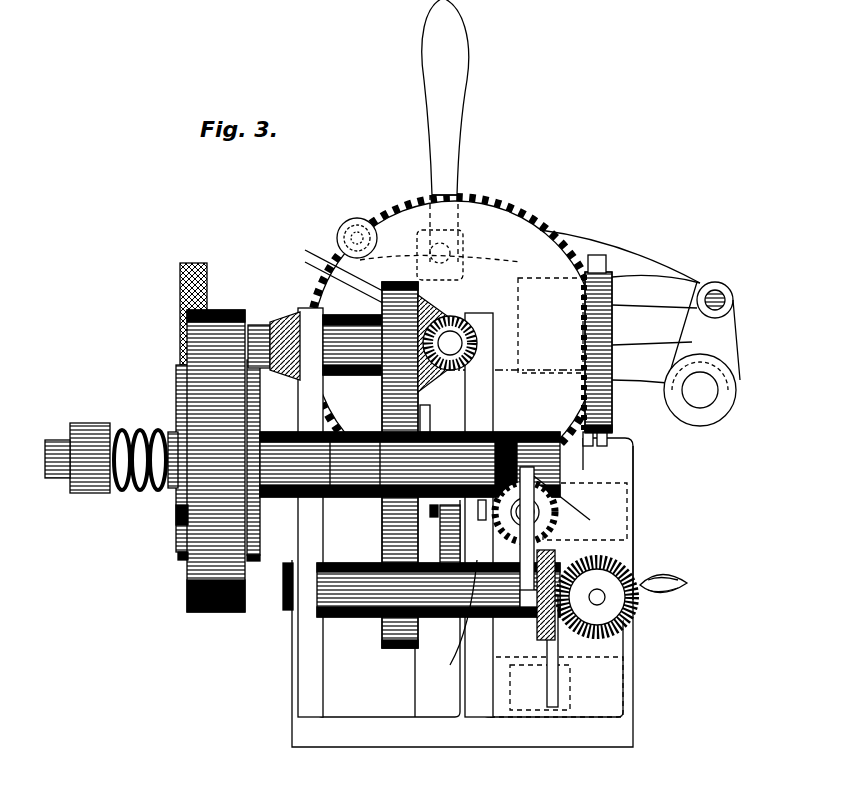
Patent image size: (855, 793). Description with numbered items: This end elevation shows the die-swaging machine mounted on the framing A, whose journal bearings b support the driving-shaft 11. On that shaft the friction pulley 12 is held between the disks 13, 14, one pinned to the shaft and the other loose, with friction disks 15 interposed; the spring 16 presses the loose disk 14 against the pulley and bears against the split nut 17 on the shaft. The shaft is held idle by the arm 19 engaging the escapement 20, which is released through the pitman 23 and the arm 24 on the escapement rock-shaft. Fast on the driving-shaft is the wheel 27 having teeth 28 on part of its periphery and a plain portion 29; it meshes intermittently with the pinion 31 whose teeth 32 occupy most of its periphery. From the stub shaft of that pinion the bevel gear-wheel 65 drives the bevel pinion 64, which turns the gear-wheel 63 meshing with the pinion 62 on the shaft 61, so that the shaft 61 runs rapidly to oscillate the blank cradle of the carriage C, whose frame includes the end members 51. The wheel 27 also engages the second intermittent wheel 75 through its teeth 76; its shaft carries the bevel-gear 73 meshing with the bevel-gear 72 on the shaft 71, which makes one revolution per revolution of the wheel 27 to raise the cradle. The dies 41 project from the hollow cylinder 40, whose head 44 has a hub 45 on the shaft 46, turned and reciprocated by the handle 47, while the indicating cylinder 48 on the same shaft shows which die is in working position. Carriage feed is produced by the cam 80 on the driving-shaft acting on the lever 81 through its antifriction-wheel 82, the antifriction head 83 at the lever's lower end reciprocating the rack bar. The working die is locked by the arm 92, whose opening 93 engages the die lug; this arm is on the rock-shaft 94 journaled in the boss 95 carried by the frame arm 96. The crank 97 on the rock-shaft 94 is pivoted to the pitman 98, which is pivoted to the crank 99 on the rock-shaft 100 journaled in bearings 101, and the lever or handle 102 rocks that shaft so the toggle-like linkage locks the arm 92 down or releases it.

The driving-shaft 11 is at (60, 480).
The friction pulley 12 is at (220, 613).
The disk 13 is at (260, 507).
The loose disk 14 is at (175, 513).
The friction disks 15 is at (183, 553).
The spring 16 is at (133, 427).
The split nut 17 is at (90, 423).
The arm 19 is at (425, 413).
The escapement 20 is at (435, 420).
The pitman 23 is at (440, 513).
The arm 24 is at (450, 540).
The wheel 27 is at (387, 513).
The teeth 28 is at (387, 533).
The plain portion 29 is at (397, 560).
The pinion 31 is at (335, 300).
The teeth 32 is at (335, 307).
The hollow cylinder 40 is at (620, 290).
The dies 41 is at (602, 258).
The head 44 is at (540, 230).
The hub 45 is at (528, 222).
The shaft 46 is at (262, 327).
The handle 47 is at (193, 262).
The cylinder 48 is at (332, 512).
The end members 51 is at (630, 490).
The shaft 61 is at (535, 478).
The pinion 62 is at (560, 508).
The gear-wheel 63 is at (477, 210).
The bevel pinion 64 is at (440, 303).
The bevel gear-wheel 65 is at (450, 285).
The shaft 71 is at (595, 596).
The bevel-gear 72 is at (643, 622).
The bevel-gear 73 is at (538, 637).
The wheel 75 is at (382, 635).
The teeth 76 is at (405, 625).
The cam 80 is at (520, 437).
The lever 81 is at (450, 617).
The antifriction-wheel 82 is at (491, 467).
The antifriction head 83 is at (552, 697).
The arm 92 is at (680, 573).
The opening 93 is at (615, 407).
The rock-shaft 94 is at (700, 390).
The boss 95 is at (735, 373).
The arm 96 is at (640, 263).
The crank 97 is at (725, 338).
The pitman 98 is at (700, 280).
The crank 99 is at (392, 205).
The rock-shaft 100 is at (379, 238).
The bearings 101 is at (465, 190).
The lever or handle 102 is at (458, 64).
The framing A is at (290, 696).
The journal bearings b is at (173, 422).
The carriage C is at (627, 520).